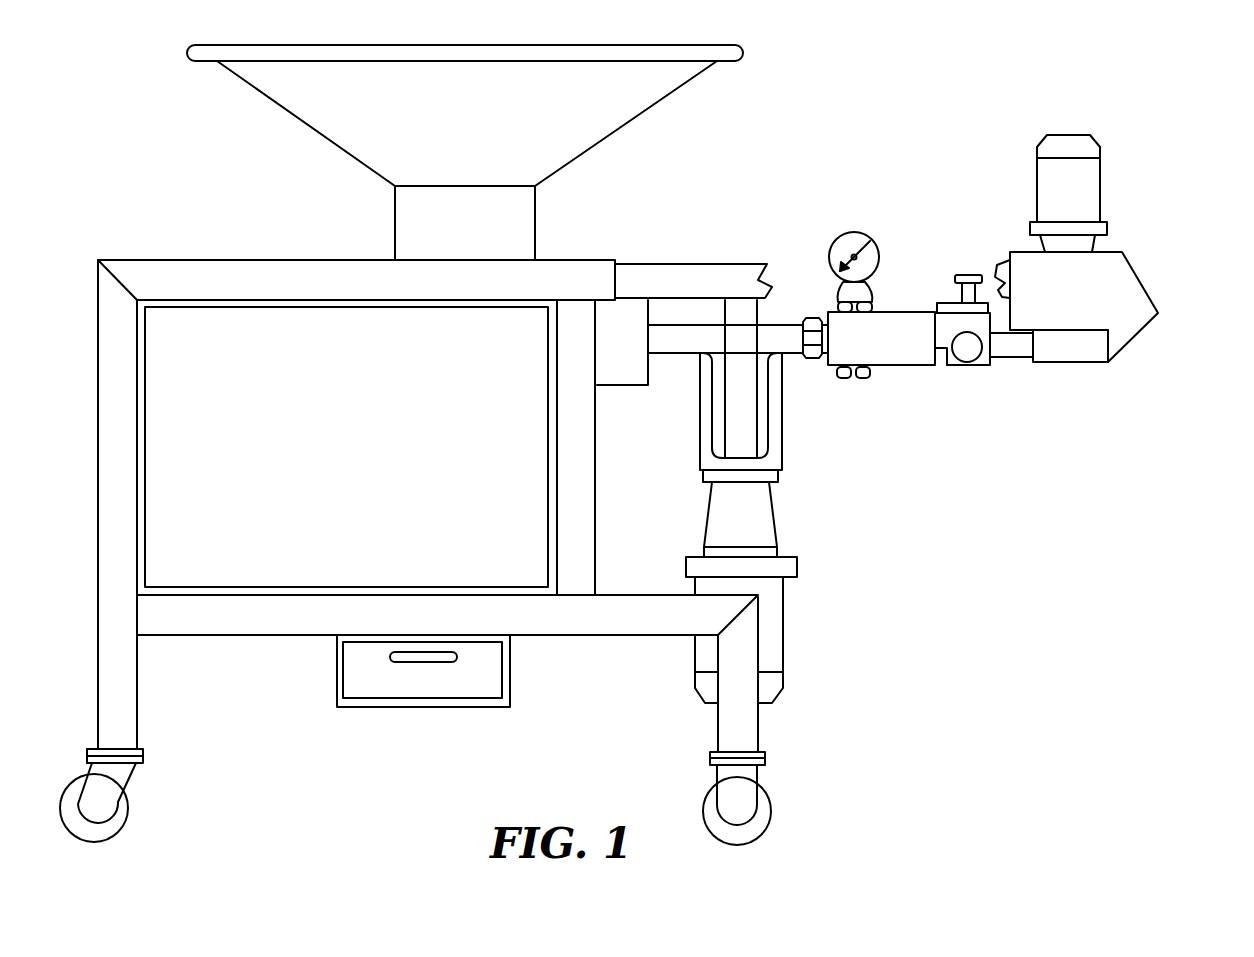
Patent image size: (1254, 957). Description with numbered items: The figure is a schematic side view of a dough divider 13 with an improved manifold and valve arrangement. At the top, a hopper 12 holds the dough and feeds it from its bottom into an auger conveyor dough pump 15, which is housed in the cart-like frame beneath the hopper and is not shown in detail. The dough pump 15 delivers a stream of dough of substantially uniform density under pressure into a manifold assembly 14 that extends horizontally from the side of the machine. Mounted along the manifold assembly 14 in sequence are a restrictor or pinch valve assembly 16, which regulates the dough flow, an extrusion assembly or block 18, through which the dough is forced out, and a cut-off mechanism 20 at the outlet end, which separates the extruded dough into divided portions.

The hopper 12 is at (450, 139).
The dough divider 13 is at (770, 190).
The manifold assembly 14 is at (883, 364).
The auger conveyor dough pump 15 is at (498, 343).
The restrictor or pinch valve assembly 16 is at (975, 367).
The extrusion assembly or block 18 is at (1082, 365).
The cut-off mechanism 20 is at (1135, 278).